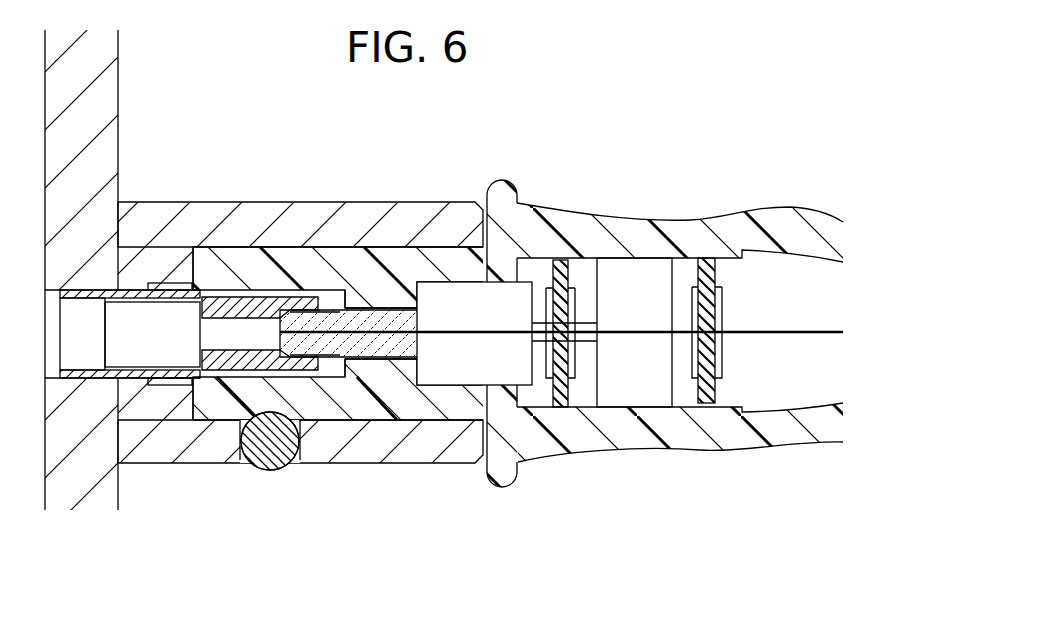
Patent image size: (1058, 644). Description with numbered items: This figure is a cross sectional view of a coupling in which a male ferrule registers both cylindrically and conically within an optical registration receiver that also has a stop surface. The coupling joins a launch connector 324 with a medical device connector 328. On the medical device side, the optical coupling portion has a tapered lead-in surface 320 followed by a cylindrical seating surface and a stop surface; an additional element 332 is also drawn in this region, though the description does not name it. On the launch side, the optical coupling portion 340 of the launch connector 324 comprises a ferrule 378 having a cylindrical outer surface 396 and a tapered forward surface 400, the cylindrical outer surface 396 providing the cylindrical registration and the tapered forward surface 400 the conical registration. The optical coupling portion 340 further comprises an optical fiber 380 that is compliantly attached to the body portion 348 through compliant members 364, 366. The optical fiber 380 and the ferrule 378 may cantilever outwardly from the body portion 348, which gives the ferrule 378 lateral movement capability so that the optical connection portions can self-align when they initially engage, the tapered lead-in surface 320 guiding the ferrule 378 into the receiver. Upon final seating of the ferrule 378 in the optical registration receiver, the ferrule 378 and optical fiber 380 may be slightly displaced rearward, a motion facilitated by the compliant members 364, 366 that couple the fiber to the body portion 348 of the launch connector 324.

The tapered lead-in surface 320 is at (337, 420).
The launch connector 324 is at (236, 315).
The medical device connector 328 is at (250, 318).
The threaded portion 332 is at (330, 310).
The optical coupling portion 340 is at (428, 385).
The body portion 348 is at (638, 425).
The compliant member 364 is at (556, 407).
The compliant member 366 is at (703, 405).
The ferrule 378 is at (398, 308).
The optical fiber 380 is at (488, 340).
The cylindrical outer surface 396 is at (395, 378).
The tapered forward surface 400 is at (250, 430).